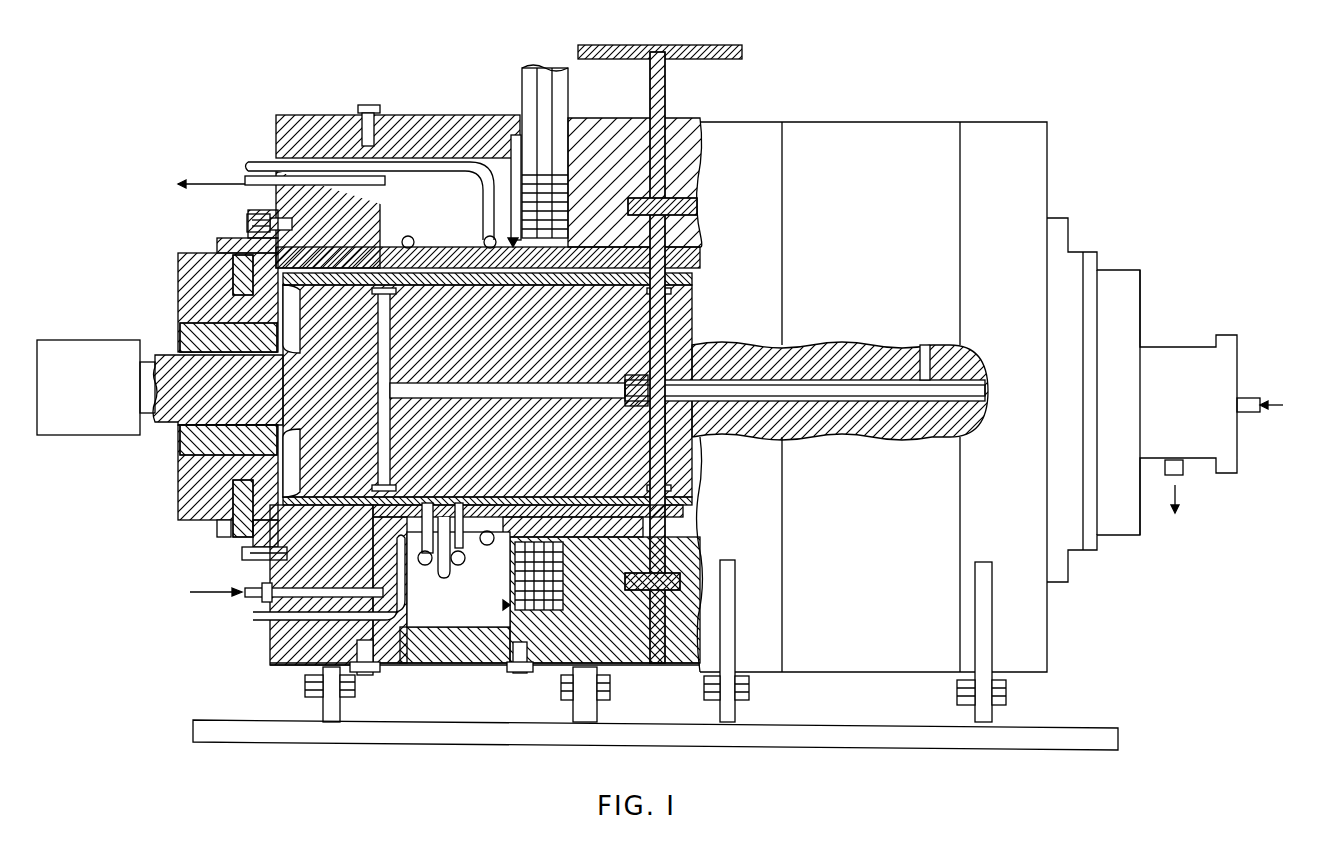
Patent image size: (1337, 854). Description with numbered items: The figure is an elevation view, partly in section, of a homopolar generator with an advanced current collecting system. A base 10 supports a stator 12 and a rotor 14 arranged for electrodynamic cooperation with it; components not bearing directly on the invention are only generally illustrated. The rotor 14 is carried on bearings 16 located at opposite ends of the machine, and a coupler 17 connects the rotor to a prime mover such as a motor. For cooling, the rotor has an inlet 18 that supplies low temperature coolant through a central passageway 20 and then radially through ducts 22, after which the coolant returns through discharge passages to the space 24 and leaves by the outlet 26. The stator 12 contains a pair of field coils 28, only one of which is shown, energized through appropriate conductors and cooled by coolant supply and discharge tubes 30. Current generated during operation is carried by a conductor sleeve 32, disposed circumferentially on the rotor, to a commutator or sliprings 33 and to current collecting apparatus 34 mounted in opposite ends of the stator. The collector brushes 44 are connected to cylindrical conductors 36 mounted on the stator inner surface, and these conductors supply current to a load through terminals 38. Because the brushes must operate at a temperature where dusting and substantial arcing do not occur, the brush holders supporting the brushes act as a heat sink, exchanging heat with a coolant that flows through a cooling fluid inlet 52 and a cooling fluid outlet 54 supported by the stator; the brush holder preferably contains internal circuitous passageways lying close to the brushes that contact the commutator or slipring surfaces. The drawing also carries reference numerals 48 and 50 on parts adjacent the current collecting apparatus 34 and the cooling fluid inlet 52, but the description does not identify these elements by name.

The base 10 is at (314, 742).
The stator 12 is at (275, 652).
The rotor 14 is at (167, 354).
The bearings 16 is at (180, 444).
The coupler 17 is at (78, 340).
The inlet 18 is at (1245, 396).
The central passageway 20 is at (747, 396).
The ducts 22 is at (378, 446).
The space 24 is at (843, 384).
The outlet 26 is at (1186, 478).
The field coils 28 is at (566, 216).
The coolant supply and discharge tubes 30 is at (546, 68).
The conductor sleeve 32 is at (680, 502).
The commutator or sliprings 33 is at (458, 504).
The current collecting apparatus 34 is at (460, 573).
The cylindrical conductors 36 is at (603, 248).
The terminals 38 is at (670, 45).
The collector brushes 44 is at (440, 578).
The ring 48 is at (488, 546).
The pipe 50 is at (254, 616).
The cooling fluid inlet 52 is at (252, 580).
The cooling fluid outlet 54 is at (248, 185).